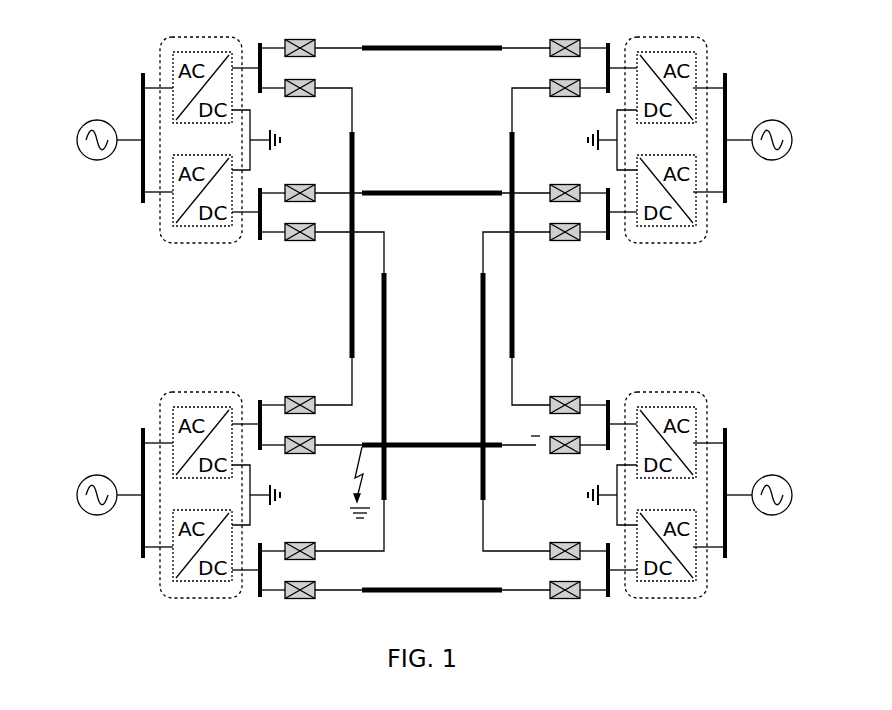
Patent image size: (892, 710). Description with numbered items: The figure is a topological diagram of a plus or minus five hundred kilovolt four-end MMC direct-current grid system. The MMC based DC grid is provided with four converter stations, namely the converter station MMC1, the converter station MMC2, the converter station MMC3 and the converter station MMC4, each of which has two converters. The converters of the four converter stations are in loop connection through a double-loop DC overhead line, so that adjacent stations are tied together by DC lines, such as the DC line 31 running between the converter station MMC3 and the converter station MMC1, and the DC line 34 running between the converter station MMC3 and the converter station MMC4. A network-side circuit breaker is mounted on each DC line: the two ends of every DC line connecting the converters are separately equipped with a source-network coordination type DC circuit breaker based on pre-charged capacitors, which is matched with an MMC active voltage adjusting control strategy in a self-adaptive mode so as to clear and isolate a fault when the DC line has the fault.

The DC transmission line l31 between MMC3 and MMC1 31 is at (333, 246).
The DC transmission line l34 between MMC3 and MMC4 34 is at (427, 422).
The converter station MMC 1 MMC1 is at (196, 122).
The converter station MMC 2 MMC2 is at (671, 122).
The converter station MMC 3 MMC3 is at (196, 479).
The converter station MMC 4 MMC4 is at (671, 479).